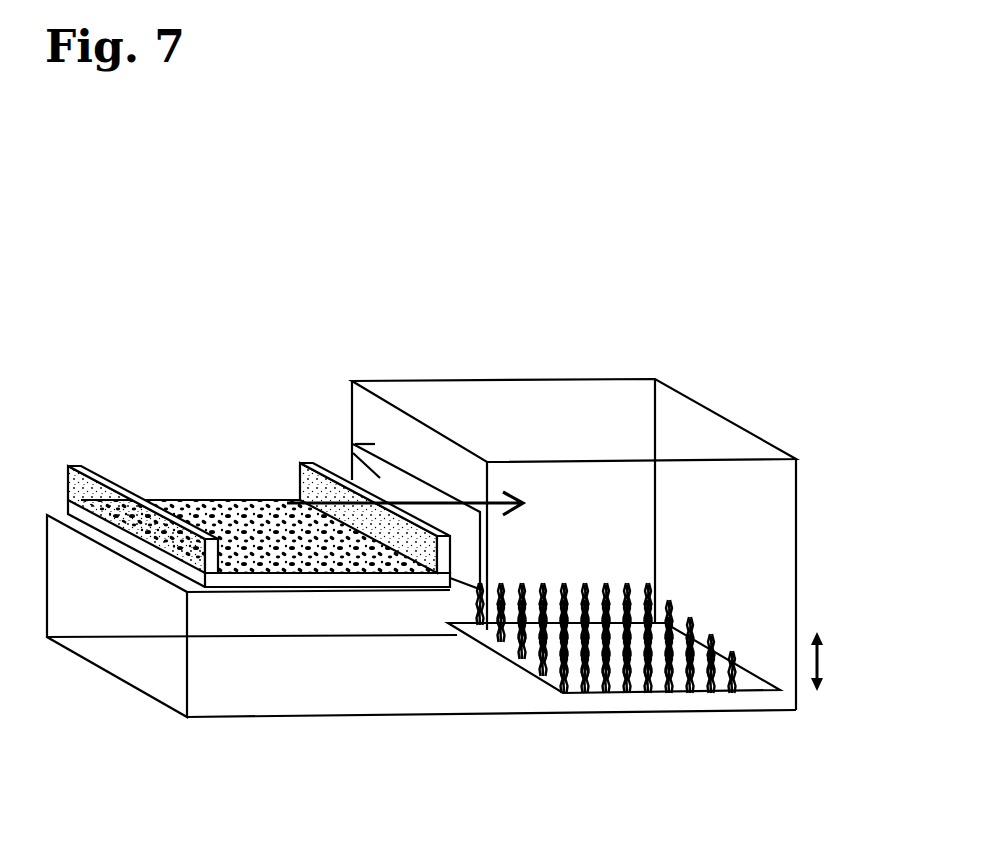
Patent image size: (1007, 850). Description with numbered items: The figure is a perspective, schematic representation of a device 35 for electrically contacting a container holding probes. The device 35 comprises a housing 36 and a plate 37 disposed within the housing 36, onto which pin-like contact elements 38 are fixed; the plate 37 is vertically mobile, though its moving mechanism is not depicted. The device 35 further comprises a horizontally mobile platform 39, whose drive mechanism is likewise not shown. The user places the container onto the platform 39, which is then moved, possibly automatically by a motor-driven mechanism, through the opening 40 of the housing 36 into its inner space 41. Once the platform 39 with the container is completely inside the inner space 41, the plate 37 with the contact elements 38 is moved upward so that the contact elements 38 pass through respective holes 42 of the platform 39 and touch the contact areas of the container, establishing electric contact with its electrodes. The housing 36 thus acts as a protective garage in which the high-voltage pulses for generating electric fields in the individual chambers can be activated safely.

The device 35 is at (522, 312).
The housing 36 is at (700, 438).
The plate 37 is at (750, 690).
The pin-like contact elements 38 is at (668, 607).
The platform 39 is at (72, 487).
The opening 40 is at (352, 470).
The inner space 41 is at (348, 462).
The holes 42 is at (288, 570).